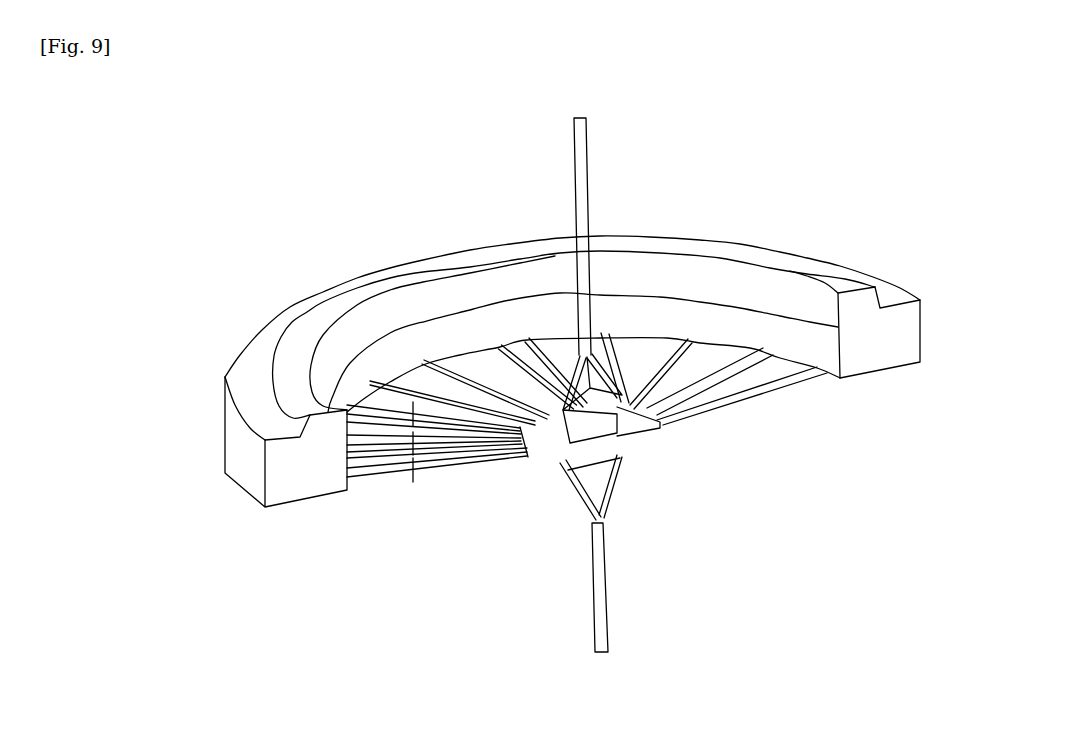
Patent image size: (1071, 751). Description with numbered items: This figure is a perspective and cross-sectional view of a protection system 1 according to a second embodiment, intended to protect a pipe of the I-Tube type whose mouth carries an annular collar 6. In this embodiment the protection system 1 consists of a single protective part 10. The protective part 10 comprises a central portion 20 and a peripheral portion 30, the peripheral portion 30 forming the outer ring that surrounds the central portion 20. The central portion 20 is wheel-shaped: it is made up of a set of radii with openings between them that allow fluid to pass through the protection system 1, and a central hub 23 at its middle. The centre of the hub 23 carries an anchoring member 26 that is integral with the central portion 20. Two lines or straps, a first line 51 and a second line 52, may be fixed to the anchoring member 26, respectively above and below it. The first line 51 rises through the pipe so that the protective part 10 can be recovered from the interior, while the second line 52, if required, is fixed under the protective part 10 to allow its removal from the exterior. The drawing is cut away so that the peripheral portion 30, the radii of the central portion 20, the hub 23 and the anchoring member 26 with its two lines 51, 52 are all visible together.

The protection system 1 is at (242, 246).
The protective part 10 is at (185, 352).
The peripheral portion 30 is at (210, 478).
The annular collar 6 is at (888, 340).
The central portion 20 is at (397, 515).
The first line 51 is at (590, 205).
The second line 52 is at (605, 600).
The anchoring member 26 is at (612, 437).
The central hub 23 is at (563, 458).